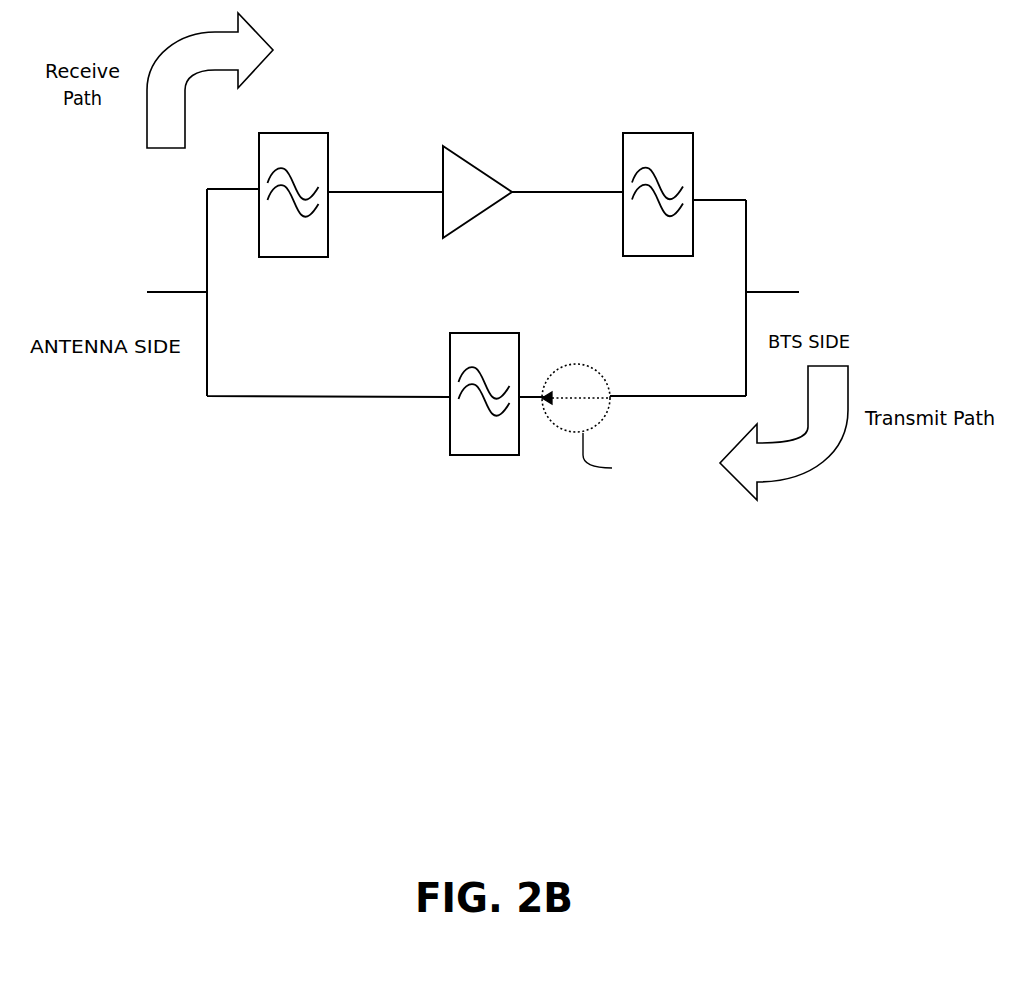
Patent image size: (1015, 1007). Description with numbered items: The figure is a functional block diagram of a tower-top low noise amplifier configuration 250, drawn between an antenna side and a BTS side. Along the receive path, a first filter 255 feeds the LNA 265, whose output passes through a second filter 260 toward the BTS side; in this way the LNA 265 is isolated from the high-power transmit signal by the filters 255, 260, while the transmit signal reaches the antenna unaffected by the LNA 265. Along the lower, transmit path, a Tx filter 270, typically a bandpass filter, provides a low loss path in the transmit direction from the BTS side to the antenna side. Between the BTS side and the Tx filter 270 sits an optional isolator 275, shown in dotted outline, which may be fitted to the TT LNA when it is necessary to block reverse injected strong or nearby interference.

The tower-top low noise amplifier configuration 250 is at (167, 558).
The filter 255 is at (277, 180).
The LNA 265 is at (488, 168).
The filter 260 is at (681, 180).
The Tx filter 270 is at (458, 411).
The optional isolator 275 is at (614, 430).